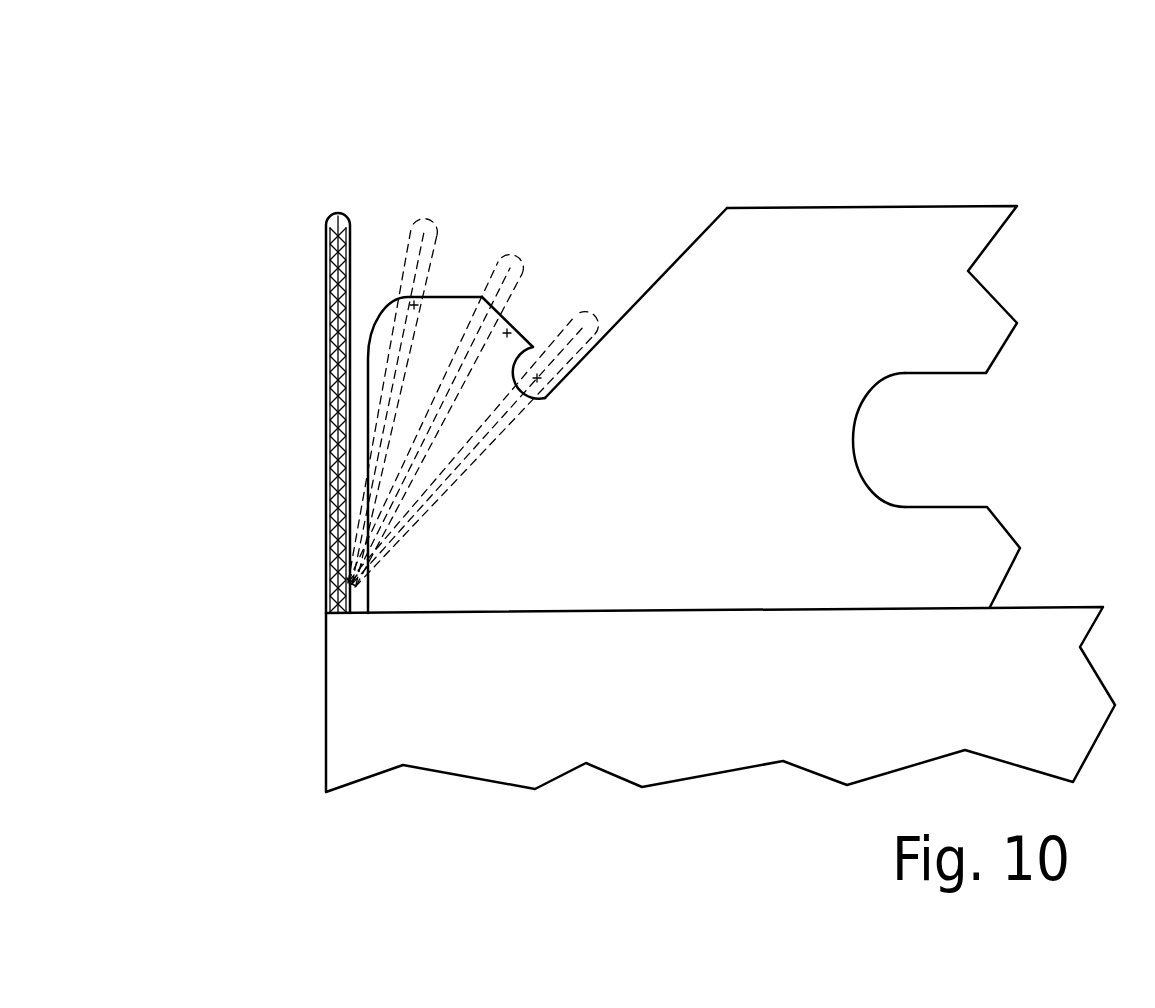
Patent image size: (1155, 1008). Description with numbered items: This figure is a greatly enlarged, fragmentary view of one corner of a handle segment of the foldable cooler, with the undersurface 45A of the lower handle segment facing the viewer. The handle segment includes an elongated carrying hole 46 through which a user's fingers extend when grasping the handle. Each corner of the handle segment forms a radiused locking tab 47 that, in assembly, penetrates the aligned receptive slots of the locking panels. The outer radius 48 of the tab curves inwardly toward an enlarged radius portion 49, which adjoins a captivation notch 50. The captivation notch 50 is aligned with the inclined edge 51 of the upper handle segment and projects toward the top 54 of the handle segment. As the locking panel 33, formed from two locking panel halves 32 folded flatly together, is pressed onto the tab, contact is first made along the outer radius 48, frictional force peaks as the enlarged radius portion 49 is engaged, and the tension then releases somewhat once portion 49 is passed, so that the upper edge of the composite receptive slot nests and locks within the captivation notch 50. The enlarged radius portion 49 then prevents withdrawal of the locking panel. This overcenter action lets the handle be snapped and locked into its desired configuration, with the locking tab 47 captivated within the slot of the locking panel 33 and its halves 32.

The locking panel half 32 is at (327, 478).
The outer locking panel 33 is at (417, 226).
The undersurface of handle segment 45A is at (842, 344).
The carrying hole 46 is at (953, 448).
The locking tab 47 is at (374, 335).
The outer radius 48 is at (460, 293).
The enlarged radius portion 49 is at (473, 449).
The captivation notch 50 is at (542, 398).
The inclined edge 51 is at (698, 237).
The top 54 is at (955, 205).